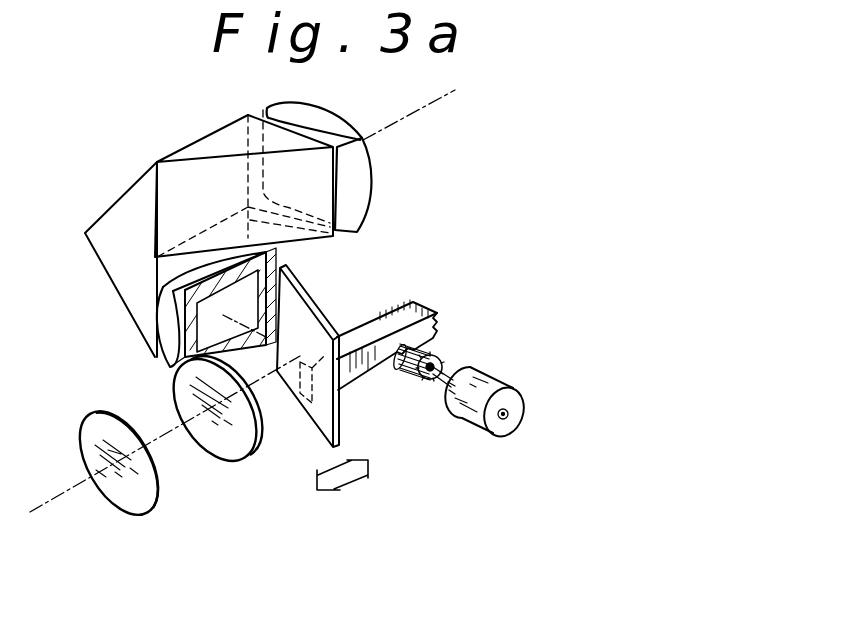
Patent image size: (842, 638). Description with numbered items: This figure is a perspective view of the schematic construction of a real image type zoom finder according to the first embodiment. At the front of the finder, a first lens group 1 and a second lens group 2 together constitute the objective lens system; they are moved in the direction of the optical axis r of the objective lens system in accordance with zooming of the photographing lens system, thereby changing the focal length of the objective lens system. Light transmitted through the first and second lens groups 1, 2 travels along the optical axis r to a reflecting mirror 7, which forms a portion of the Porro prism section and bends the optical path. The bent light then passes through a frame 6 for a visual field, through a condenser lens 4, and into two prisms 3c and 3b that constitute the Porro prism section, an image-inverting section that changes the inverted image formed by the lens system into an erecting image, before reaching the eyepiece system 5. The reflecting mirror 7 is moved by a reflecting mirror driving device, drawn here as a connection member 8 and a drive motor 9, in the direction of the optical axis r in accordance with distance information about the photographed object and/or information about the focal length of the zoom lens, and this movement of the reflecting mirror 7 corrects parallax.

The first lens group 1 is at (133, 507).
The second lens group 2 is at (230, 449).
The prism 3b is at (207, 145).
The prism 3c is at (122, 272).
The condenser lens 4 is at (167, 333).
The eyepiece system 5 is at (371, 182).
The frame for a visual field 6 is at (290, 256).
The reflecting mirror 7 is at (317, 305).
The connection member 8 is at (433, 325).
The drive motor 9 is at (483, 387).
The optical axis r is at (229, 310).